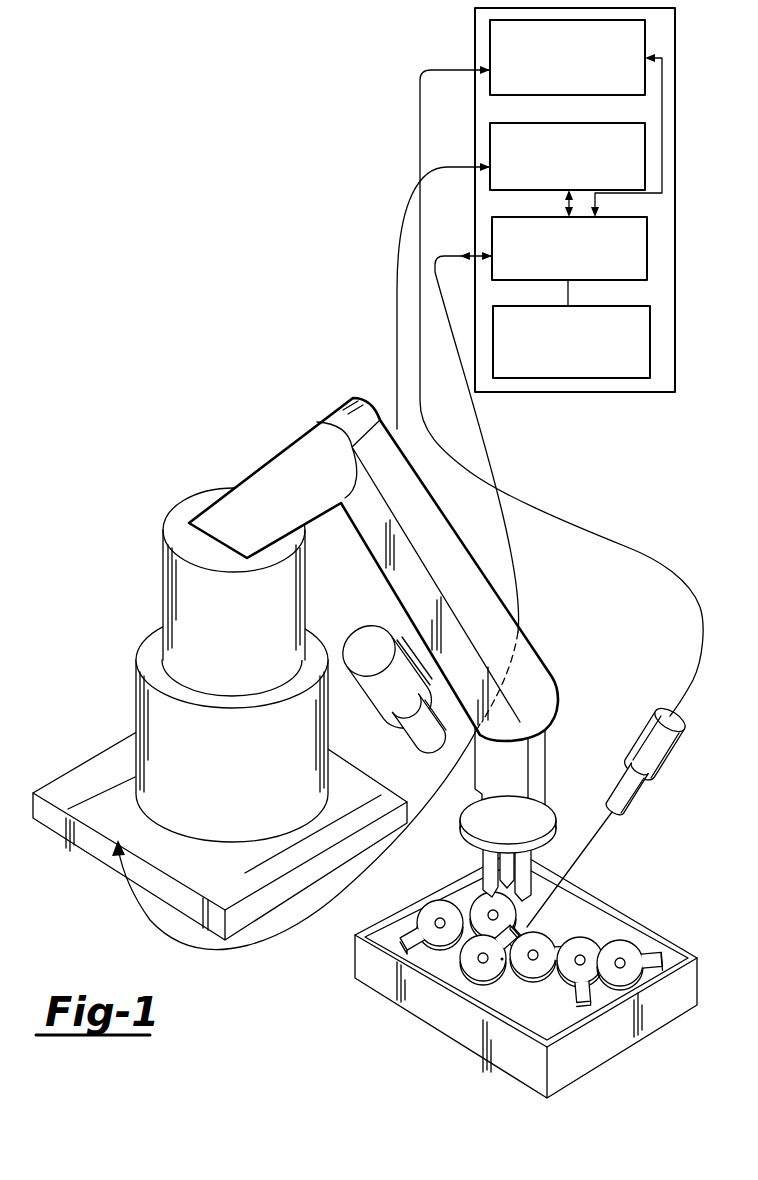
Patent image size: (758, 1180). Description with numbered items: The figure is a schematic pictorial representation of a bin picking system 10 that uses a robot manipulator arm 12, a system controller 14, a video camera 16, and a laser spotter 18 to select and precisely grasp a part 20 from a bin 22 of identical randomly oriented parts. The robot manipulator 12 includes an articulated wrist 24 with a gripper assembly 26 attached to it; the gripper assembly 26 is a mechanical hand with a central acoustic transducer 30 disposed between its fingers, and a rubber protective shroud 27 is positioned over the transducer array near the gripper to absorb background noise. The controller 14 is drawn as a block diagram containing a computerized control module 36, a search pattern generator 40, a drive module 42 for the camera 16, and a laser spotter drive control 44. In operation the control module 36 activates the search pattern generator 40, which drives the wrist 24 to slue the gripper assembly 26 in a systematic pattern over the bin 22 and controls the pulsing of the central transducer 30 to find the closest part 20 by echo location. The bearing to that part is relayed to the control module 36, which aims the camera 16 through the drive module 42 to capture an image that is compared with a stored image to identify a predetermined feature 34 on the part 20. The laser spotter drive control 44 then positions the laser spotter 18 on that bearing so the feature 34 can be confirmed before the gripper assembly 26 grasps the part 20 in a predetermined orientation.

The bin picking system 10 is at (377, 264).
The robot manipulator arm 12 is at (315, 669).
The system controller 14 is at (601, 218).
The video camera 16 is at (343, 647).
The laser spotter 18 is at (675, 750).
The part 20 is at (483, 962).
The bin 22 is at (640, 923).
The articulated wrist 24 is at (560, 702).
The gripper assembly 26 is at (446, 840).
The protective shroud 27 is at (566, 817).
The central acoustic transducer 30 is at (407, 1003).
The predetermined feature 34 is at (502, 960).
The control module 36 is at (647, 247).
The search pattern generator 40 is at (650, 333).
The drive module 42 is at (645, 165).
The laser spotter drive control 44 is at (645, 45).